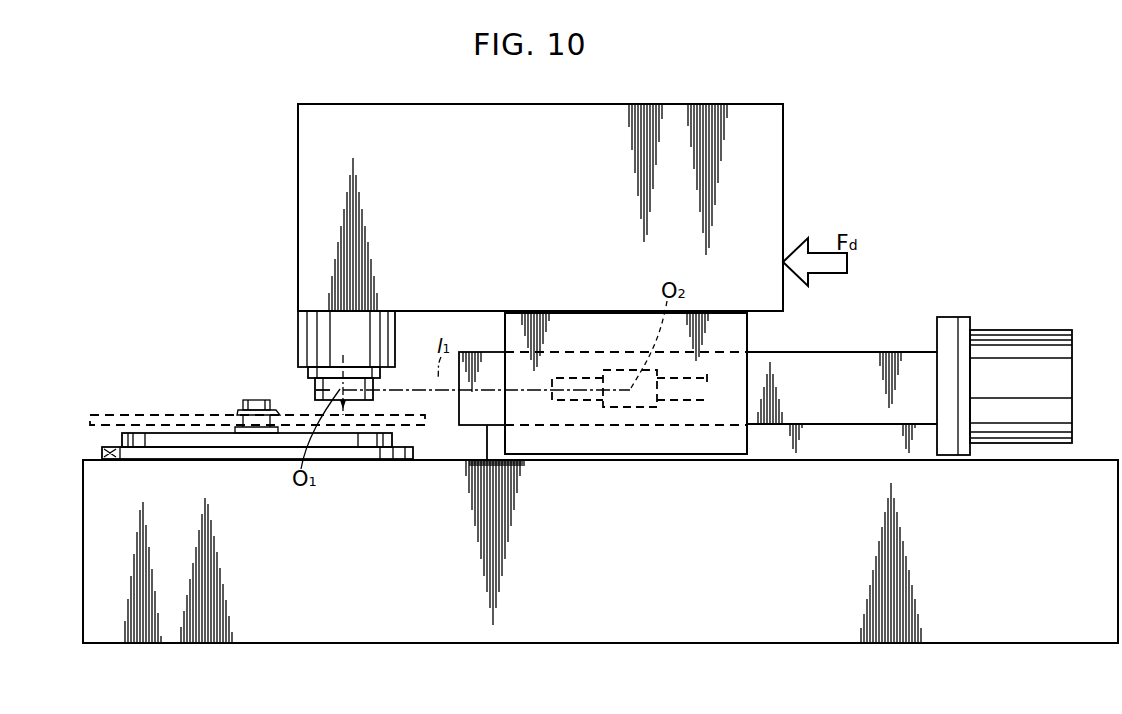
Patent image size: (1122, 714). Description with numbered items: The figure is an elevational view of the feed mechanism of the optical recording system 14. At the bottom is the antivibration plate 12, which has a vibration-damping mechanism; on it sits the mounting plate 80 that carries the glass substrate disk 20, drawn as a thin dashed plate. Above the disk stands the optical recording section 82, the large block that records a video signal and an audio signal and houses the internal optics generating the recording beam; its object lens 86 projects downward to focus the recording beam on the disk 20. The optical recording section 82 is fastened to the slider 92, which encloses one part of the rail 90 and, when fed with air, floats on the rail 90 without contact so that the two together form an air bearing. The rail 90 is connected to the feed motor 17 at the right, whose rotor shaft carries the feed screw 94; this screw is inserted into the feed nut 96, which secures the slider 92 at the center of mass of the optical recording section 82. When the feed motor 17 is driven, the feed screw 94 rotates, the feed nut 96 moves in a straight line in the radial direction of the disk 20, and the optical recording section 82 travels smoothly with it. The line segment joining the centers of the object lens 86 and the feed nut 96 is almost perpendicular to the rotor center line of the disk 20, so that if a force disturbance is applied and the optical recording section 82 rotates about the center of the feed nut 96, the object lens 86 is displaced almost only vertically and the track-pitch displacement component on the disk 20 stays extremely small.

The antivibration plate 12 is at (677, 644).
The optical recording system 14 is at (284, 308).
The feed motor 17 is at (1035, 340).
The disk 20 is at (142, 414).
The mounting plate 80 is at (101, 450).
The optical recording section 82 is at (538, 206).
The object lens 86 is at (314, 391).
The rail 90 is at (813, 425).
The slider 92 is at (748, 325).
The feed screw 94 is at (703, 378).
The feed nut 96 is at (620, 408).